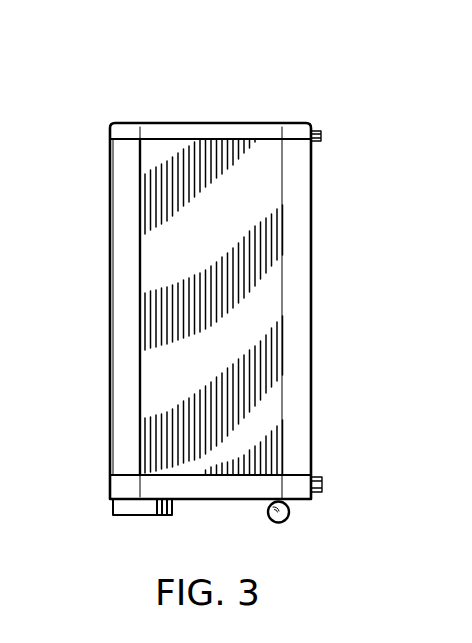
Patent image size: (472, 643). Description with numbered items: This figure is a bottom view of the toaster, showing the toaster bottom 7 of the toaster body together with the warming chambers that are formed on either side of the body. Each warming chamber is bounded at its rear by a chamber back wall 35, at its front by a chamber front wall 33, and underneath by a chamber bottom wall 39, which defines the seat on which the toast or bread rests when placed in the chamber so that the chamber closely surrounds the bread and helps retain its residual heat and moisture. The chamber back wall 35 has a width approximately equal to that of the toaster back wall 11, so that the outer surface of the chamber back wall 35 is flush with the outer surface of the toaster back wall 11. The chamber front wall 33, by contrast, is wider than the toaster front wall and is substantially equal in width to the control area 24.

The toaster back wall 11 is at (203, 132).
The chamber back wall 35 is at (125, 135).
The toaster bottom 7 is at (238, 214).
The chamber bottom wall 39 is at (124, 328).
The chamber front wall 33 is at (122, 486).
The control area 24 is at (208, 485).